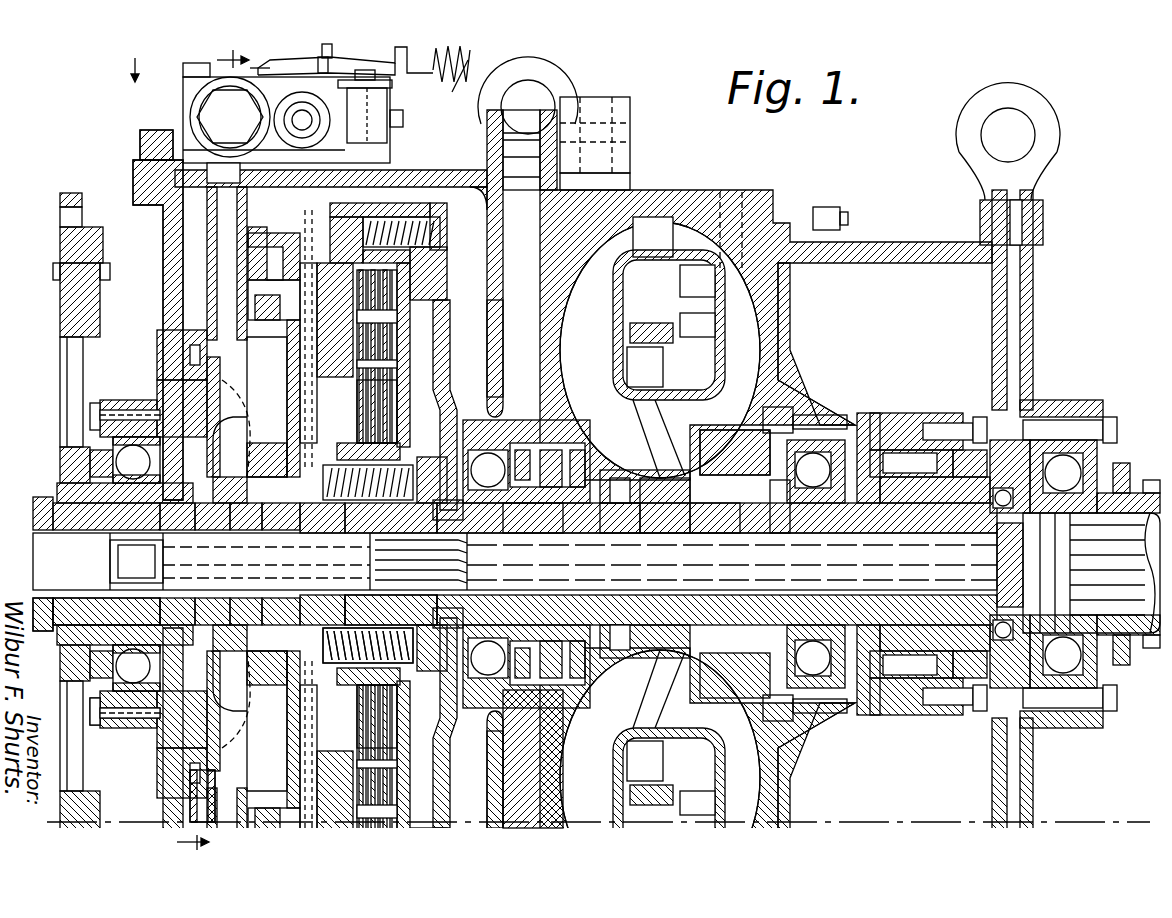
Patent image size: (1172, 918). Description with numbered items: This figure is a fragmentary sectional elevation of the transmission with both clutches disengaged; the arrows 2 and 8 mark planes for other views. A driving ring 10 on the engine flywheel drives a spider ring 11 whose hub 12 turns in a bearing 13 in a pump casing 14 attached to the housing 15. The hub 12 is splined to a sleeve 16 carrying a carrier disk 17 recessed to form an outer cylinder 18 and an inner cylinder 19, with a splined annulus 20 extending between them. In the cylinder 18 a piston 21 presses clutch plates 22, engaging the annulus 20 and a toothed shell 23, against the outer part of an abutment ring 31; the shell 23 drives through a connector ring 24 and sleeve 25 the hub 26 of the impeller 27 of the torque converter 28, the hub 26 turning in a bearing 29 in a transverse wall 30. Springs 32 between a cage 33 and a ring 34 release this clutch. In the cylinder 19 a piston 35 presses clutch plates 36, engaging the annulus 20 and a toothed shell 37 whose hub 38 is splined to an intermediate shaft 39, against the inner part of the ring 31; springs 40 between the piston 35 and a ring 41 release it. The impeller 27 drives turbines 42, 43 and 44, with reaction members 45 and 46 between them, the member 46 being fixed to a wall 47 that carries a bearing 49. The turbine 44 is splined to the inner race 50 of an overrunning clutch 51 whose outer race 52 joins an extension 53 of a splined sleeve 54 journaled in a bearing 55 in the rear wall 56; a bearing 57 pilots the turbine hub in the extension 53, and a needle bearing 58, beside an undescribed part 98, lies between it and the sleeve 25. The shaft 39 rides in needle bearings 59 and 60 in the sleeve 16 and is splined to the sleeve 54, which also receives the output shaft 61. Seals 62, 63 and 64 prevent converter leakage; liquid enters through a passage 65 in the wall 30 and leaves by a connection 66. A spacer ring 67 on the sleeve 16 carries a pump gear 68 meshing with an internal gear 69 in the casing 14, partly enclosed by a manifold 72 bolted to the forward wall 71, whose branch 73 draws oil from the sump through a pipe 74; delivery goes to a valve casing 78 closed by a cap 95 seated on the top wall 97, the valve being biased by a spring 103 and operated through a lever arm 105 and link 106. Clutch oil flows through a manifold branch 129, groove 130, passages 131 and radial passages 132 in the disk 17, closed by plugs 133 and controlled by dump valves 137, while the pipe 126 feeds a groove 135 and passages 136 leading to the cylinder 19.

The section line 2- 2 is at (201, 452).
The direction arrow 8 is at (144, 69).
The driving ring 10 is at (60, 232).
The spider ring 11 is at (60, 312).
The hub 12 is at (60, 475).
The bearing 13 is at (136, 460).
The pump casing 14 is at (127, 400).
The housing 15 is at (160, 257).
The sleeve 16 is at (35, 520).
The carrier disk 17 is at (290, 350).
The annular cylinder 18 is at (318, 228).
The annular cylinder 19 is at (340, 530).
The splined annulus 20 is at (445, 338).
The annular piston 21 is at (347, 217).
The clutch plates 22 is at (410, 258).
The toothed shell 23 is at (447, 258).
The connector ring 24 is at (430, 296).
The sleeve 25 is at (530, 520).
The impeller hub 26 is at (582, 487).
The impeller 27 is at (625, 355).
The hydraulic torque converter 28 is at (701, 186).
The bearing 29 is at (526, 461).
The transverse wall 30 is at (487, 347).
The abutment ring 31 is at (397, 323).
The helical springs 32 is at (440, 208).
The cage 33 is at (407, 205).
The ring 34 is at (380, 222).
The annular piston 35 is at (360, 530).
The clutch plates 36 is at (385, 415).
The toothed shell 37 is at (400, 449).
The hub 38 is at (391, 607).
The intermediate shaft 39 is at (635, 525).
The helical springs 40 is at (368, 473).
The ring 41 is at (430, 468).
The turbine 42 is at (613, 282).
The turbine 43 is at (700, 281).
The turbine 44 is at (660, 350).
The reaction member 45 is at (653, 237).
The reaction member 46 is at (700, 325).
The transverse wall 47 is at (767, 293).
The bearing 49 is at (816, 471).
The inner race 50 is at (900, 505).
The overrunning clutch 51 is at (870, 413).
The outer race 52 is at (912, 413).
The annular outward extension 53 is at (960, 418).
The internally splined sleeve 54 is at (1100, 500).
The bearing 55 is at (1063, 476).
The housing rear wall 56 is at (1033, 343).
The bearing 57 is at (997, 525).
The needle bearing 58 is at (745, 505).
The needle bearing 59 is at (110, 548).
The needle bearing 60 is at (154, 607).
The output shaft 61 is at (1103, 617).
The sealing member 62 is at (560, 487).
The sealing member 63 is at (662, 510).
The sealing member 64 is at (710, 525).
The passage 65 is at (508, 263).
The connection 66 is at (630, 118).
The spacer ring 67 is at (180, 520).
The pump gear 68 is at (215, 520).
The internal gear 69 is at (90, 415).
The housing forward wall 71 is at (163, 305).
The manifold 72 is at (160, 333).
The manifold branch 73 is at (181, 737).
The pipe 74 is at (205, 825).
The casing 78 is at (183, 97).
The cap 95 is at (390, 93).
The top wall 97 is at (470, 165).
The collar 98 is at (778, 505).
The spring 103 is at (453, 85).
The lever arm 105 is at (380, 62).
The link 106 is at (325, 50).
The pipe 126 is at (207, 218).
The manifold branch 129 is at (250, 407).
The annular groove 130 is at (245, 525).
The passages 131 is at (272, 525).
The radial passages 132 is at (292, 327).
The plugs 133 is at (300, 235).
The annular groove 135 is at (240, 503).
The longitudinal passages 136 is at (356, 629).
The dump valve 137 is at (257, 225).